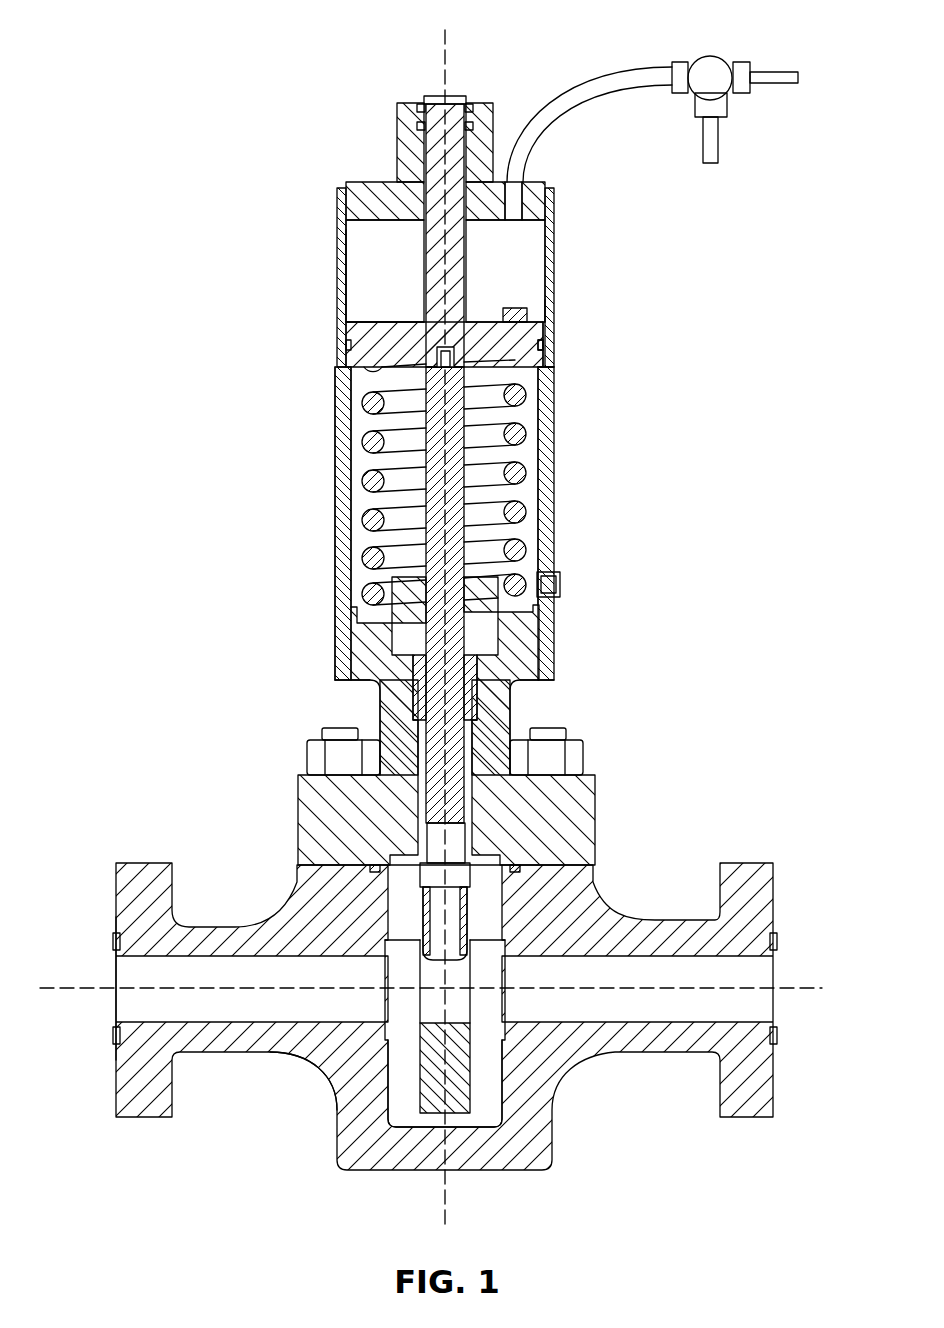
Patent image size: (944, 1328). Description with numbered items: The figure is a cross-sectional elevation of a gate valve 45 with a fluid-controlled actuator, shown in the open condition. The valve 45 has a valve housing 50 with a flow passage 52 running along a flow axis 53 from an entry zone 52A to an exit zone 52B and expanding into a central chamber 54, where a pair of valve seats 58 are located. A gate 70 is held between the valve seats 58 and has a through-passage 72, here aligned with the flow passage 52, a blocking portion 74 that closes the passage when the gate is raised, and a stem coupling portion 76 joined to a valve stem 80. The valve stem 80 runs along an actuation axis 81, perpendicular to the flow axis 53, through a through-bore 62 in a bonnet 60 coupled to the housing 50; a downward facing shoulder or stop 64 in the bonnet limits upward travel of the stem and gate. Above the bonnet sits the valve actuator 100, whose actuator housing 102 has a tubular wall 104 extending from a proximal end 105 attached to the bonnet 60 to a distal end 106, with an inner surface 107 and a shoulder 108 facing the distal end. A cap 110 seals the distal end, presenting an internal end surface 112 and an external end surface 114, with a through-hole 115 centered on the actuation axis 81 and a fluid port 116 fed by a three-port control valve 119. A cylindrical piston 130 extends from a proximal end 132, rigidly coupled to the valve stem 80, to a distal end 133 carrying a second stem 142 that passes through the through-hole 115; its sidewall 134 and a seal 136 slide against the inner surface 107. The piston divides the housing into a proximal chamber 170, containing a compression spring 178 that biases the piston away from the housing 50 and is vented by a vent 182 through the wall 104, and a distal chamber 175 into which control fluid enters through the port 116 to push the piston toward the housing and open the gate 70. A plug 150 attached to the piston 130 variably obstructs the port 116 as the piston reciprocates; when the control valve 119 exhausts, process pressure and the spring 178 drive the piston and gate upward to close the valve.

The valve 45 is at (238, 52).
The valve housing 50 is at (212, 937).
The flow passage 52 is at (130, 975).
The entry zone 52A is at (128, 1005).
The exit zone 52B is at (655, 1003).
The flow axis 53 is at (798, 978).
The chamber 54 is at (450, 858).
The valve seats 58 is at (405, 975).
The bonnet 60 is at (312, 816).
The through-bore 62 is at (500, 818).
The downward facing shoulder or stop 64 is at (470, 780).
The gate 70 is at (435, 1067).
The through-passage 72 is at (453, 1007).
The blocking portion 74 is at (420, 1098).
The stem coupling portion 76 is at (488, 889).
The valve stem 80 is at (468, 813).
The actuation axis 81 is at (448, 56).
The valve actuator 100 is at (338, 398).
The actuator housing 102 is at (340, 470).
The tubular wall 104 is at (340, 430).
The proximal end 105 is at (343, 626).
The distal end 106 is at (337, 200).
The inner surface 107 is at (352, 302).
The shoulder 108 is at (548, 375).
The cap 110 is at (397, 136).
The internal end surface 112 is at (368, 228).
The external end surface 114 is at (377, 182).
The through-hole 115 is at (534, 141).
The fluid port 116 is at (530, 208).
The three-port control valve 119 is at (712, 68).
The piston 130 is at (346, 362).
The proximal end 132 is at (522, 392).
The distal end 133 is at (548, 300).
The sidewall 134 is at (551, 356).
The seal 136 is at (547, 342).
The second stem 142 is at (422, 98).
The plug 150 is at (512, 306).
The proximal chamber 170 is at (362, 553).
The distal chamber 175 is at (347, 322).
The compression spring 178 is at (519, 508).
The vent 182 is at (560, 580).